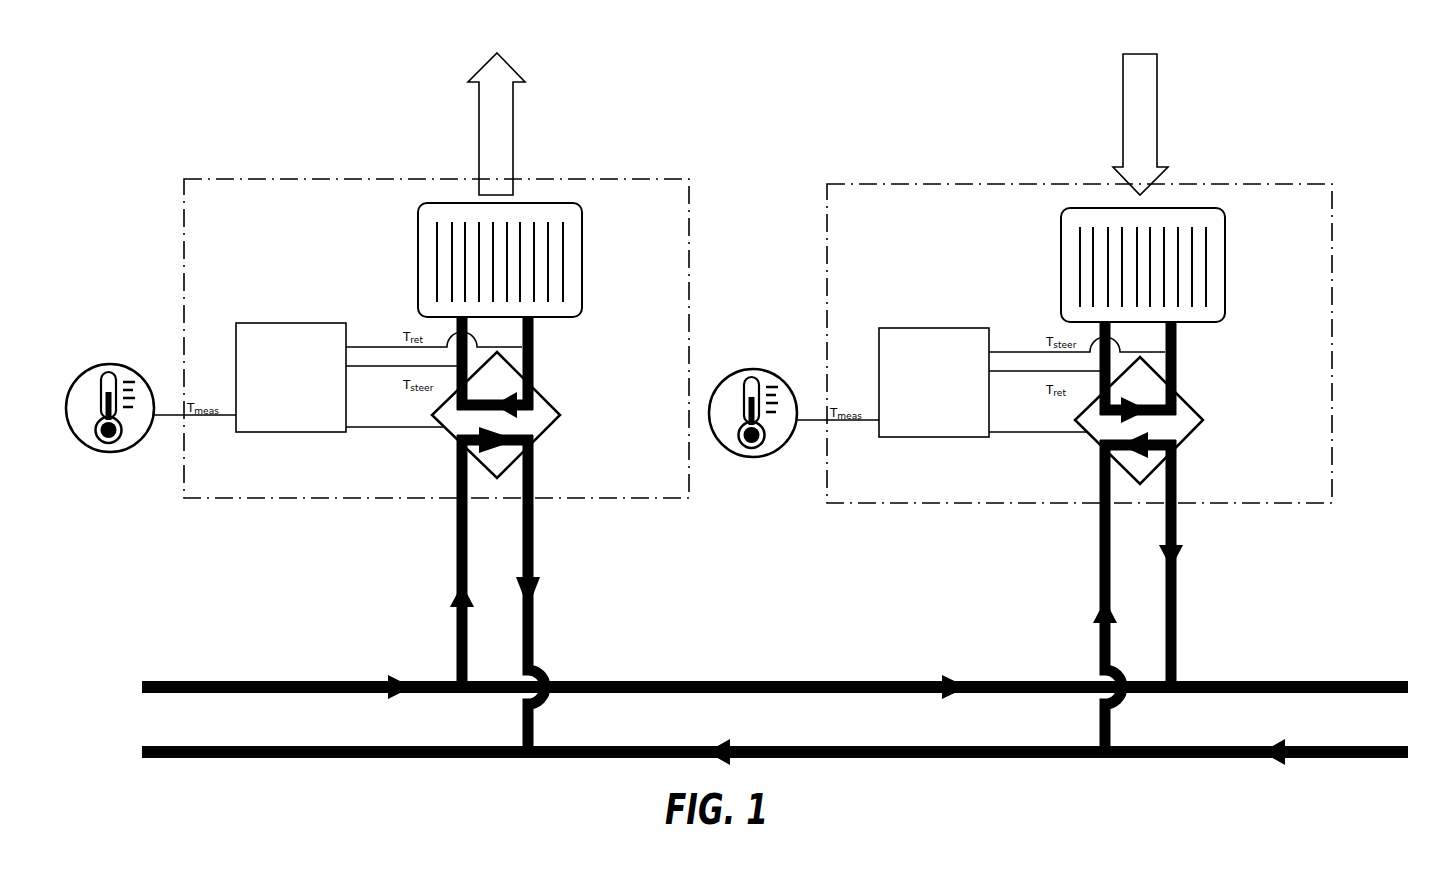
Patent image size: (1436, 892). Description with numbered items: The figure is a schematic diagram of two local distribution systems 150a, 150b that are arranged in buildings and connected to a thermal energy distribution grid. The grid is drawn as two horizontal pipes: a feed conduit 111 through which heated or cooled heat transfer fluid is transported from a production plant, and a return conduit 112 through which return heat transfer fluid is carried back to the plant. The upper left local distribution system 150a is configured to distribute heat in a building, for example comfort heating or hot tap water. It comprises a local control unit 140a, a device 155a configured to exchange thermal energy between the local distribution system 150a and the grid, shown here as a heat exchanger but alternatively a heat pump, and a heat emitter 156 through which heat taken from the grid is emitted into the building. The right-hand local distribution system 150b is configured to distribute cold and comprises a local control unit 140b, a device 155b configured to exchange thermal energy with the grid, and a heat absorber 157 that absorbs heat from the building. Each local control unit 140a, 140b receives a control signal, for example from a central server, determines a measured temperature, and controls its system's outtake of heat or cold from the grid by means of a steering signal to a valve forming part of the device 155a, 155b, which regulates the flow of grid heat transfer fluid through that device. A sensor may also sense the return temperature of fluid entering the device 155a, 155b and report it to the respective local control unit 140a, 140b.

The feed conduit 111 is at (370, 680).
The return conduit 112 is at (617, 746).
The local control unit 140a is at (271, 418).
The local control unit 140b is at (914, 423).
The local distribution system 150a is at (677, 478).
The local distribution system 150b is at (1317, 487).
The device configured to exchange thermal energy 155a is at (547, 413).
The device configured to exchange thermal energy 155b is at (1184, 408).
The heat emitter 156 is at (573, 243).
The heat absorber 157 is at (1215, 248).